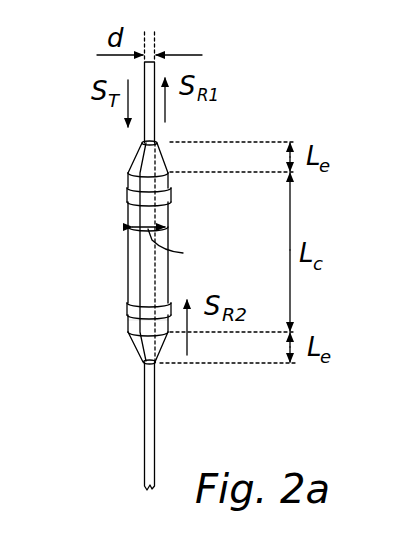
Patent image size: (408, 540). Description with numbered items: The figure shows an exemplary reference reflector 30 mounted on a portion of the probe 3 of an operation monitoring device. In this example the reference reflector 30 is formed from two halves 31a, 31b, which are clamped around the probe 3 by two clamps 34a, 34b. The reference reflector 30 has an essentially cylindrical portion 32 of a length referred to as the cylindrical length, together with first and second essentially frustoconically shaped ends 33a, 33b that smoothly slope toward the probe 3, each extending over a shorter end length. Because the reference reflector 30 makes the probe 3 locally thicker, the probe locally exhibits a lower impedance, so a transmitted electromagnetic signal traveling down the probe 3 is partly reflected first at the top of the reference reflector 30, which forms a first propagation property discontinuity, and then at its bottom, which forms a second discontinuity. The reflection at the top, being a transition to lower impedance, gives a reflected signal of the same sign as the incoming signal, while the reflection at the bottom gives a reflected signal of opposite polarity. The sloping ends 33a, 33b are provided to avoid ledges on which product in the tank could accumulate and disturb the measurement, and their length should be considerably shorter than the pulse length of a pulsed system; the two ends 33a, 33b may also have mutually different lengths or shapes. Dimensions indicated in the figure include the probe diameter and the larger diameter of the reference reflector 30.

The probe 3 is at (155, 413).
The reference reflector 30 is at (171, 246).
The first half of the reference reflector 31a is at (137, 348).
The second half of the reference reflector 31b is at (168, 322).
The cylindrical portion 32 is at (114, 173).
The first frustoconically shaped end 33a is at (114, 143).
The second frustoconically shaped end 33b is at (114, 330).
The first clamp 34a is at (177, 193).
The second clamp 34b is at (173, 301).